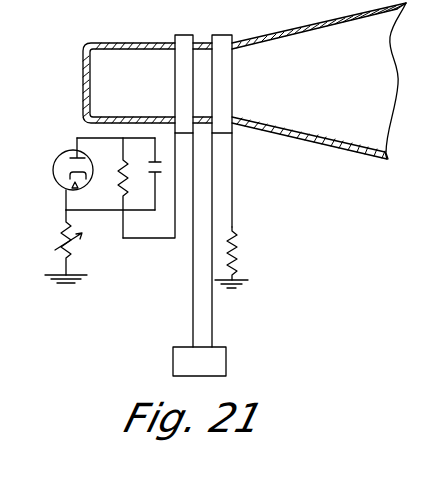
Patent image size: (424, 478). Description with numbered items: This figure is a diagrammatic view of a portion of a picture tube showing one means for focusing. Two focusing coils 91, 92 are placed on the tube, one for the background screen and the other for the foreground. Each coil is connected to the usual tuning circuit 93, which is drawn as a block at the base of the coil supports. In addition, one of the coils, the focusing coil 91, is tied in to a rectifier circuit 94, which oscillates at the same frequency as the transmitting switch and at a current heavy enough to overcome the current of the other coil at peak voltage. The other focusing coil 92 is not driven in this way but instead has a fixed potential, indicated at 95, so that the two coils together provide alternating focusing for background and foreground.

The focusing coil 91 is at (182, 45).
The focusing coil 92 is at (220, 47).
The tuning circuit 93 is at (218, 362).
The rectifier circuit 94 is at (121, 258).
The fixed potential 95 is at (241, 280).